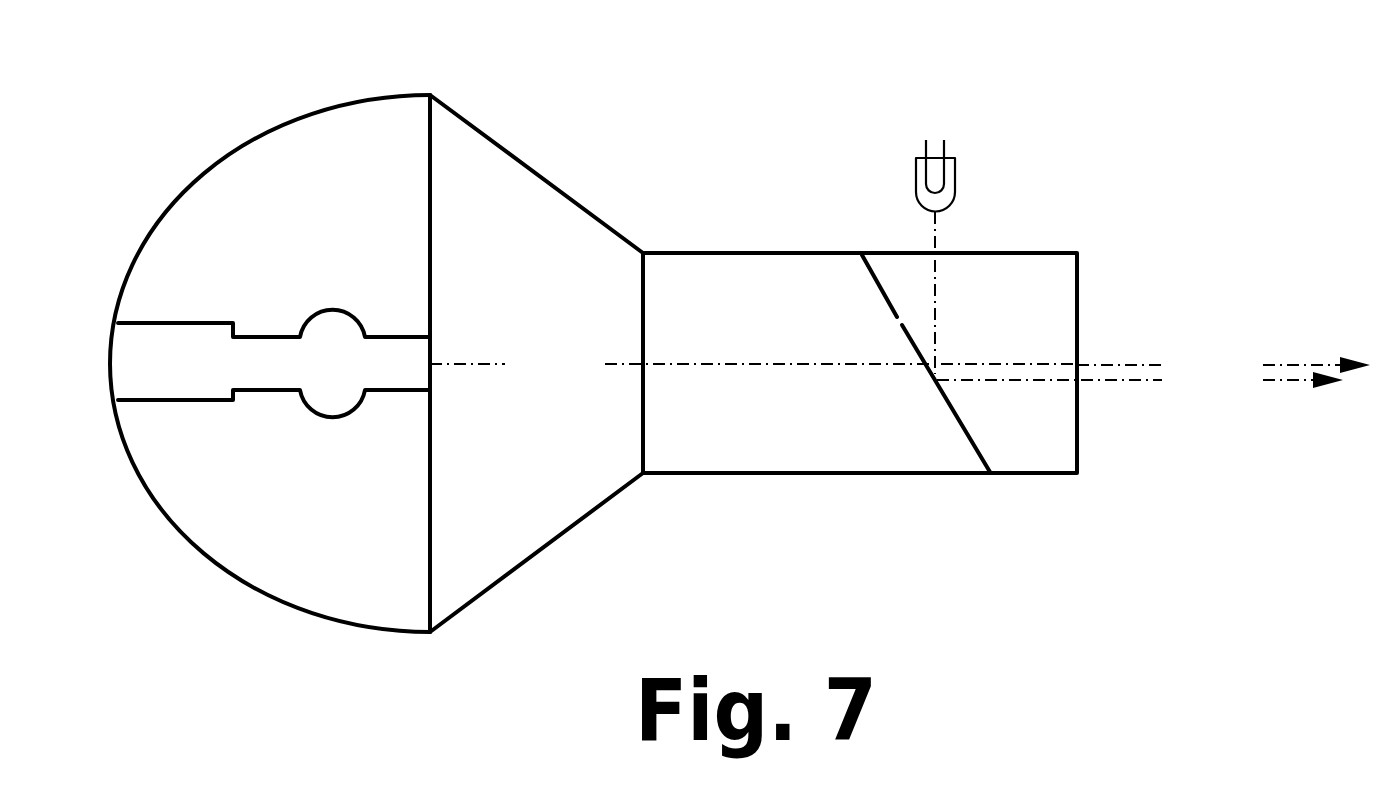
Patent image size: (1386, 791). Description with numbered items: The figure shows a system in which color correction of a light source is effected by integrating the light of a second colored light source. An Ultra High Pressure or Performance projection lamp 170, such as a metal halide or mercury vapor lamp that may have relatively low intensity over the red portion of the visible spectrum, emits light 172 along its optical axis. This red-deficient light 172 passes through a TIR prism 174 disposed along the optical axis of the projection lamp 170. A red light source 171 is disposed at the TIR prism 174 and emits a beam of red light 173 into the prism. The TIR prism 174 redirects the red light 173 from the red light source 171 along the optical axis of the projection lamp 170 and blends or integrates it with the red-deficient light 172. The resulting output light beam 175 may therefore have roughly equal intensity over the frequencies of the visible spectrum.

The projection lamp 170 is at (317, 163).
The red light source 171 is at (943, 175).
The light output by the projection lamp 172 is at (753, 363).
The beam of red light 173 is at (940, 293).
The TIR prism 174 is at (947, 405).
The output light beam 175 is at (1153, 377).